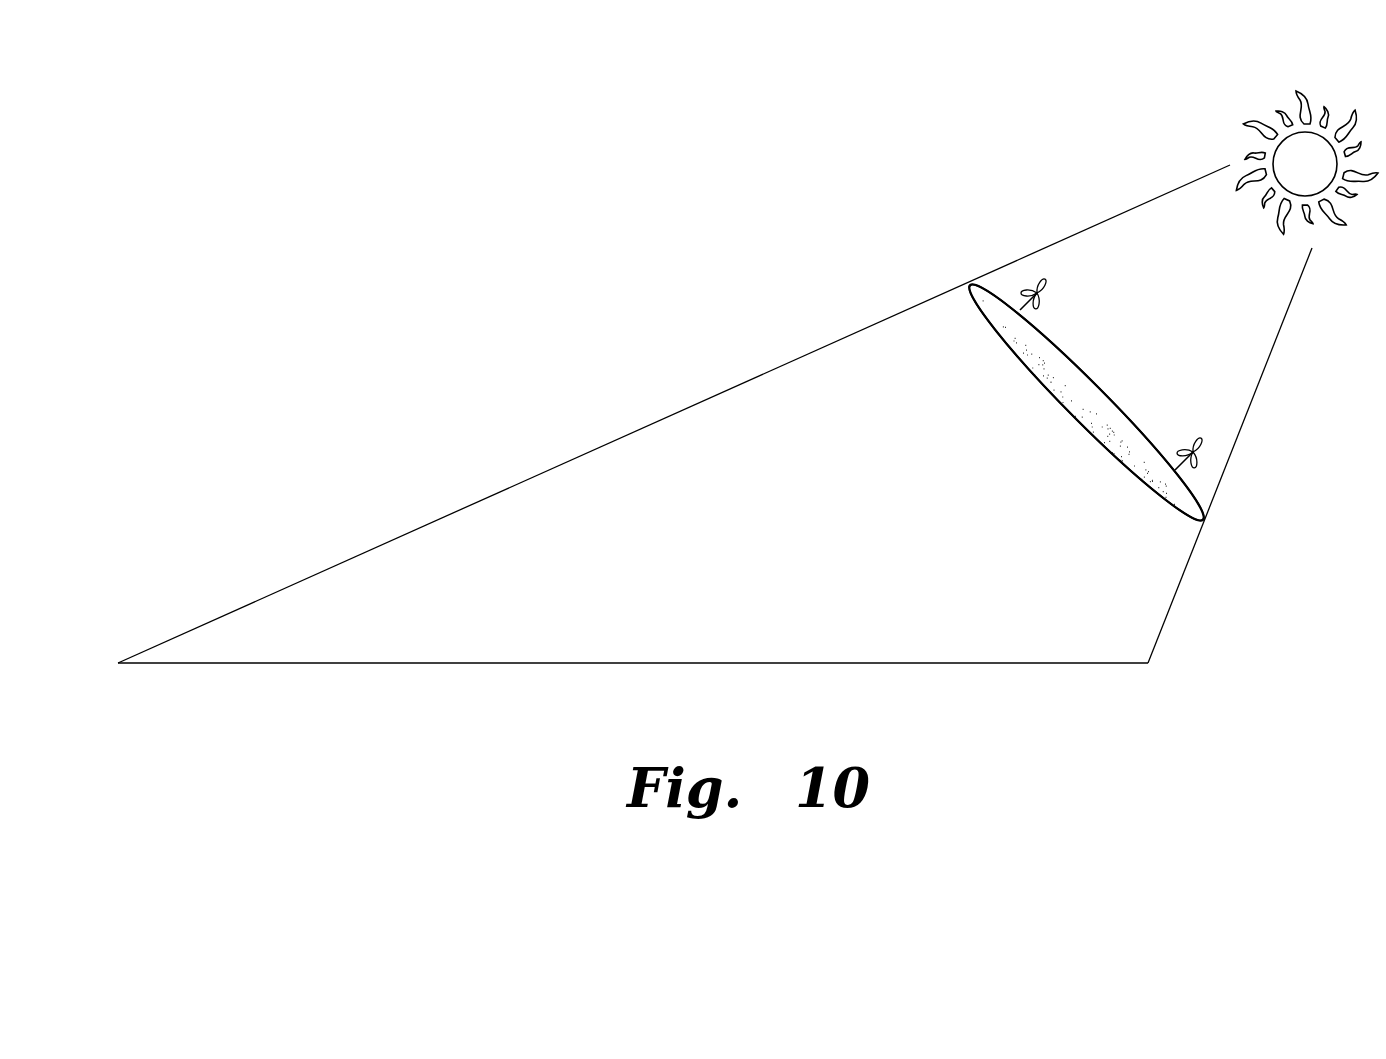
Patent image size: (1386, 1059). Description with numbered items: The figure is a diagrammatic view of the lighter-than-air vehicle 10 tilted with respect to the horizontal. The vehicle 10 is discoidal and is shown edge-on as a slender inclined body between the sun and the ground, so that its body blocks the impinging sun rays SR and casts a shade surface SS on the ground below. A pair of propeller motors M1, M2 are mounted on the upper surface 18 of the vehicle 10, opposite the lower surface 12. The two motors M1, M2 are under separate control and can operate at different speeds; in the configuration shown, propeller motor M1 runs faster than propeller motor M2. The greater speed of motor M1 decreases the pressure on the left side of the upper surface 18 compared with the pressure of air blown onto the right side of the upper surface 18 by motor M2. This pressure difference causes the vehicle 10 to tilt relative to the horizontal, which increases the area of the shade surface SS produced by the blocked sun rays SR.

The lighter-than-air vehicle 10 is at (1018, 362).
The lower surface 12 is at (1085, 428).
The upper surface 18 is at (1105, 385).
The propeller motor M1 is at (1047, 298).
The propeller motor M2 is at (1197, 438).
The sun rays SR is at (1072, 217).
The shade surface SS is at (682, 623).